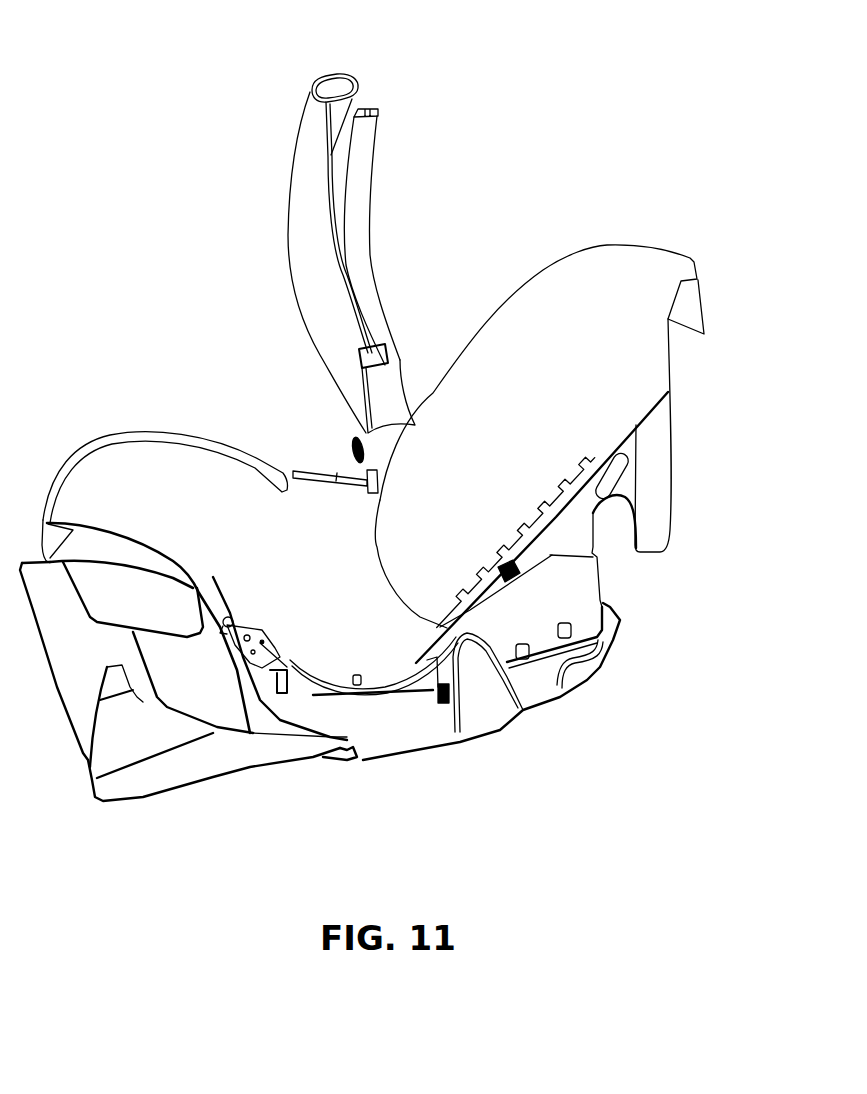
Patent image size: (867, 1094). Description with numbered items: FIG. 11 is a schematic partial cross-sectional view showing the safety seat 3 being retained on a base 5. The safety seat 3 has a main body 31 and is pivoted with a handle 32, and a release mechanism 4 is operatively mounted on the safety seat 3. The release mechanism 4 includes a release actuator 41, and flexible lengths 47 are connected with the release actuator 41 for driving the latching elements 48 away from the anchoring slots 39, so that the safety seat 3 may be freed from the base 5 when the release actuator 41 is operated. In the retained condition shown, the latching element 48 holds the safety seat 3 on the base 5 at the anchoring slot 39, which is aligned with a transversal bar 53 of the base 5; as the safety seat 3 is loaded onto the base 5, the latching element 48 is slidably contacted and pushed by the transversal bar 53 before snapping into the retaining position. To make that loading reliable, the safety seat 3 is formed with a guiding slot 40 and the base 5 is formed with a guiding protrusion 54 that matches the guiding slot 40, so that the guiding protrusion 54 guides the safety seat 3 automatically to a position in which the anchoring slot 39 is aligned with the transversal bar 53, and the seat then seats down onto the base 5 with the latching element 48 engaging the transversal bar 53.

The safety seat 3 is at (200, 320).
The release mechanism 4 is at (300, 687).
The base 5 is at (647, 743).
The main body 31 is at (658, 377).
The handle 32 is at (338, 85).
The anchoring slot 39 is at (226, 615).
The guiding slot 40 is at (440, 690).
The release actuator 41 is at (610, 482).
The flexible length 47 is at (377, 683).
The latching element 48 is at (267, 622).
The transversal bar 53 is at (233, 618).
The guiding protrusion 54 is at (507, 713).